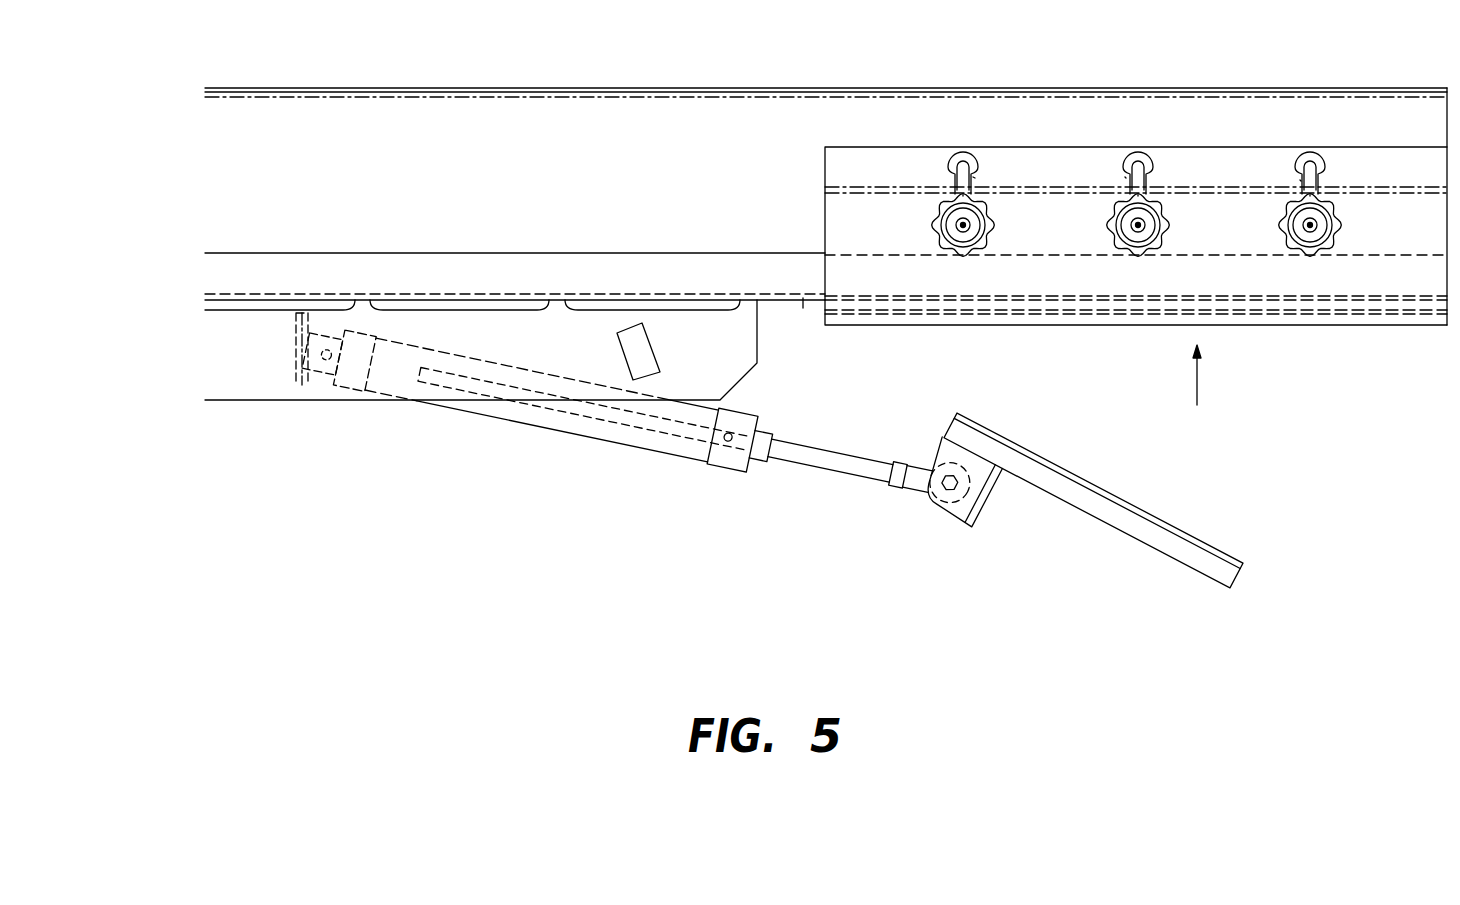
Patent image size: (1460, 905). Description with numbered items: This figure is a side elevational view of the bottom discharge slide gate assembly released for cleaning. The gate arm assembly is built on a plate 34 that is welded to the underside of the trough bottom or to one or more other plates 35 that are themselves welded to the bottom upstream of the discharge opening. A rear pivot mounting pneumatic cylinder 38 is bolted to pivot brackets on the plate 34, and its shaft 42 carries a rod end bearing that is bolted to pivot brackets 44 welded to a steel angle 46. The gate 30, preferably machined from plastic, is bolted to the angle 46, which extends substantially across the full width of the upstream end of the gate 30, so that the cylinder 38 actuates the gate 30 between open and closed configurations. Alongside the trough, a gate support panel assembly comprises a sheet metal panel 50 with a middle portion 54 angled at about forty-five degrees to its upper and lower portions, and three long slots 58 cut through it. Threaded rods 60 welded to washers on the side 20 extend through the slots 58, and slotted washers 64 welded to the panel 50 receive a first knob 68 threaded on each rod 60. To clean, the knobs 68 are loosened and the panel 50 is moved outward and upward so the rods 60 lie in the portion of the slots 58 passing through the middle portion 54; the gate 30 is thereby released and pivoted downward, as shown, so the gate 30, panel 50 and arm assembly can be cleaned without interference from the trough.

The side 20 is at (560, 206).
The gate 30 is at (1207, 543).
The plate 34 is at (294, 368).
The plates 35 is at (745, 350).
The rear pivot mounting pneumatic cylinder 38 is at (587, 437).
The shaft 42 is at (823, 443).
The pivot brackets 44 is at (950, 505).
The steel angle 46 is at (983, 503).
The sheet metal panel 50 is at (1206, 395).
The middle portion 54 is at (825, 218).
The slots 58 is at (1125, 177).
The threaded rods 60 is at (963, 225).
The slotted washers 64 is at (963, 157).
The first knob 68 is at (993, 229).